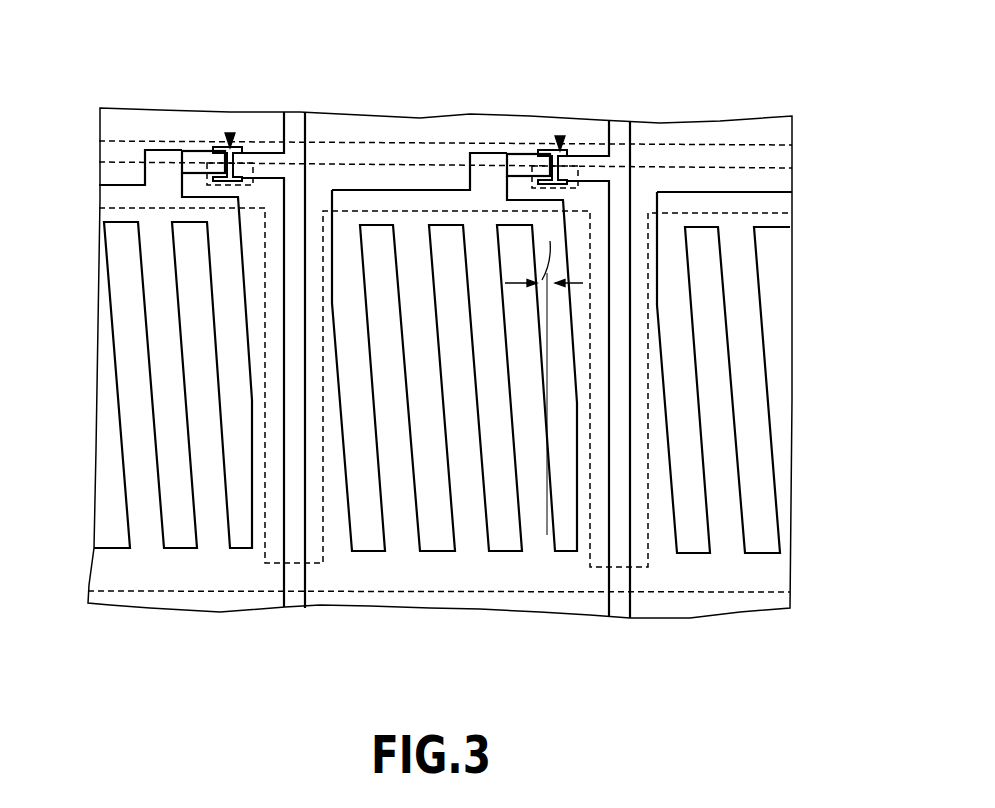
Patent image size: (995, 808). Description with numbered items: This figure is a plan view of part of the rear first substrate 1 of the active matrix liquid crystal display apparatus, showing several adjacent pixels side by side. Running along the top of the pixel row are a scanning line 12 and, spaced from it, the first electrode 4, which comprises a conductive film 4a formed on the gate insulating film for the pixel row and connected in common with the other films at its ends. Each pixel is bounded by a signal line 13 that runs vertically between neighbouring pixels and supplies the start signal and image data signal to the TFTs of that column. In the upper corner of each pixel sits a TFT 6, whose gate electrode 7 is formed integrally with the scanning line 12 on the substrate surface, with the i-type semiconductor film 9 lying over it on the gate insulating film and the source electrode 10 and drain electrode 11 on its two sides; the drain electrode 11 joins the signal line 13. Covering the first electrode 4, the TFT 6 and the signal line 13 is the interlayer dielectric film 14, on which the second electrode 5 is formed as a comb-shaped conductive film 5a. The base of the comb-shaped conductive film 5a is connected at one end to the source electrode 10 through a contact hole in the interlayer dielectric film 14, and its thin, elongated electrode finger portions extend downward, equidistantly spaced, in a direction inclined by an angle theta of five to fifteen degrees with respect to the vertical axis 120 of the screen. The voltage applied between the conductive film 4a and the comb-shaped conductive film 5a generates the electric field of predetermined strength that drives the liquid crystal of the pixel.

The first substrate 1 is at (778, 114).
The first electrode 4 is at (130, 207).
The conductive film 4a is at (493, 583).
The second electrode 5 is at (237, 540).
The comb-shaped conductive film 5a is at (107, 182).
The TFT 6 is at (230, 134).
The gate electrode 7 is at (223, 187).
The i-type semiconductor film 9 is at (220, 147).
The source electrode 10 is at (198, 148).
The drain electrode 11 is at (268, 150).
The scanning line 12 is at (738, 160).
The signal line 13 is at (290, 603).
The interlayer dielectric film 14 is at (433, 115).
The vertical axis 120 is at (547, 325).